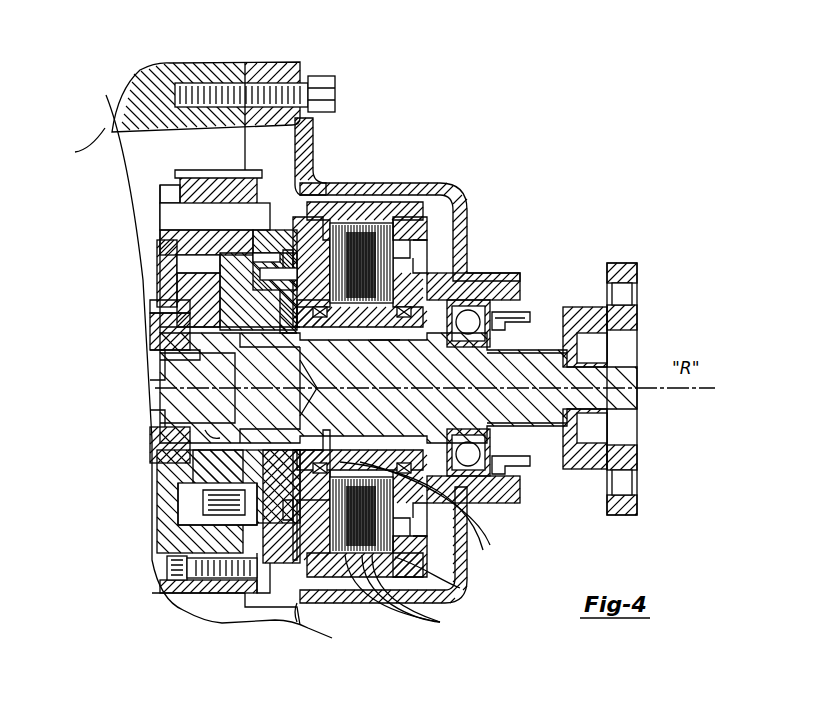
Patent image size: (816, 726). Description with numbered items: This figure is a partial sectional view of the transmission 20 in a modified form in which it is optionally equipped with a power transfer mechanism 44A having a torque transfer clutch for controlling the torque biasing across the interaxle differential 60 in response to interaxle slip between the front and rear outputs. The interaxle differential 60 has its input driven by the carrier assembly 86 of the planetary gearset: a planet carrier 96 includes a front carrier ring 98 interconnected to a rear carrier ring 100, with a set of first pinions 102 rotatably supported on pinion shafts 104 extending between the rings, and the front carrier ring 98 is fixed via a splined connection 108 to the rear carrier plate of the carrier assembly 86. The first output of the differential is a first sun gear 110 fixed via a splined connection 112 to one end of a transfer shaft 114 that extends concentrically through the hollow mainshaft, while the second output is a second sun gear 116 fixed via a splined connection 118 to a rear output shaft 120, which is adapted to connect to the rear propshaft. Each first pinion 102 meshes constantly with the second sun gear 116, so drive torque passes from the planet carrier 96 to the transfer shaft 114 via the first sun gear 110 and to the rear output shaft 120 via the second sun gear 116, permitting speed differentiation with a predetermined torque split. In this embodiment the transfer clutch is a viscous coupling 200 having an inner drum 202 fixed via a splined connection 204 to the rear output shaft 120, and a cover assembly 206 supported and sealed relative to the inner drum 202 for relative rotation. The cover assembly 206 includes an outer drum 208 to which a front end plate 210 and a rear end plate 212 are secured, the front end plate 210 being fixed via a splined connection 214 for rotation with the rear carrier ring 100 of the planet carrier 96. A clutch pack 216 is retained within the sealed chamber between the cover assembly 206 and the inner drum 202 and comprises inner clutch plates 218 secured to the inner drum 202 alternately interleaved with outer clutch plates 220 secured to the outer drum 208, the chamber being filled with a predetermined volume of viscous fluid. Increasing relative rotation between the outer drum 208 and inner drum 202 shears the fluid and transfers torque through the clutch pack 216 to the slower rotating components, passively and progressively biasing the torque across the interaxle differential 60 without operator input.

The transmission 20 is at (555, 212).
The power transfer mechanism 44A is at (133, 403).
The interaxle differential 60 is at (178, 158).
The carrier assembly 86 is at (150, 446).
The planet carrier 96 is at (150, 540).
The front carrier ring 98 is at (152, 553).
The rear carrier ring 100 is at (318, 612).
The first pinions 102 is at (170, 178).
The pinion shafts 104 is at (170, 208).
The splined connection 108 is at (157, 307).
The first sun gear 110 is at (150, 502).
The splined connection 112 is at (212, 436).
The transfer shaft 114 is at (157, 357).
The second sun gear 116 is at (158, 375).
The splined connection 118 is at (384, 347).
The rear output shaft 120 is at (630, 348).
The viscous coupling 200 is at (466, 195).
The inner drum 202 is at (492, 315).
The splined connection 204 is at (502, 435).
The cover assembly 206 is at (385, 203).
The outer drum 208 is at (350, 203).
The front end plate 210 is at (313, 247).
The rear end plate 212 is at (432, 240).
The splined connection 214 is at (289, 244).
The clutch pack 216 is at (395, 557).
The inner clutch plates 218 is at (407, 547).
The outer clutch plates 220 is at (452, 628).